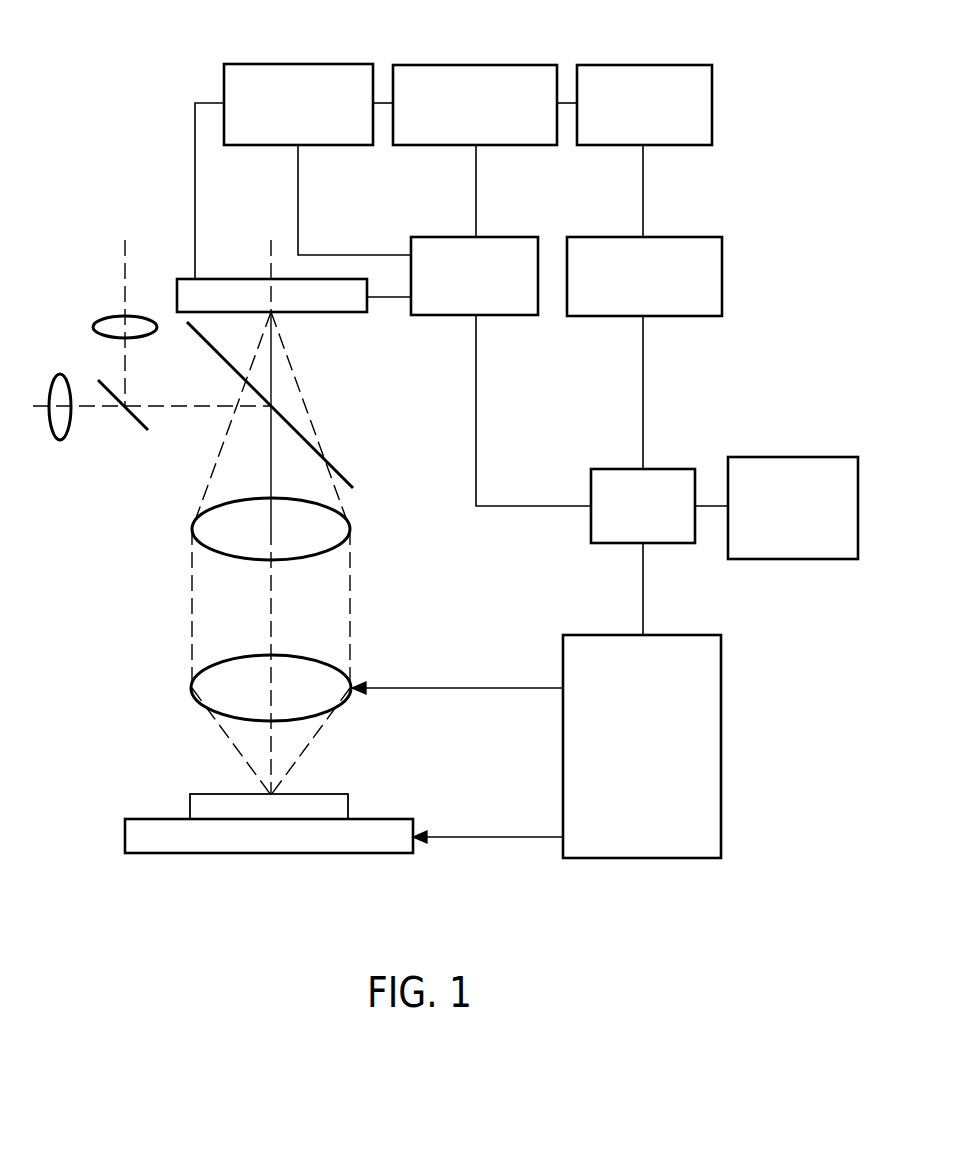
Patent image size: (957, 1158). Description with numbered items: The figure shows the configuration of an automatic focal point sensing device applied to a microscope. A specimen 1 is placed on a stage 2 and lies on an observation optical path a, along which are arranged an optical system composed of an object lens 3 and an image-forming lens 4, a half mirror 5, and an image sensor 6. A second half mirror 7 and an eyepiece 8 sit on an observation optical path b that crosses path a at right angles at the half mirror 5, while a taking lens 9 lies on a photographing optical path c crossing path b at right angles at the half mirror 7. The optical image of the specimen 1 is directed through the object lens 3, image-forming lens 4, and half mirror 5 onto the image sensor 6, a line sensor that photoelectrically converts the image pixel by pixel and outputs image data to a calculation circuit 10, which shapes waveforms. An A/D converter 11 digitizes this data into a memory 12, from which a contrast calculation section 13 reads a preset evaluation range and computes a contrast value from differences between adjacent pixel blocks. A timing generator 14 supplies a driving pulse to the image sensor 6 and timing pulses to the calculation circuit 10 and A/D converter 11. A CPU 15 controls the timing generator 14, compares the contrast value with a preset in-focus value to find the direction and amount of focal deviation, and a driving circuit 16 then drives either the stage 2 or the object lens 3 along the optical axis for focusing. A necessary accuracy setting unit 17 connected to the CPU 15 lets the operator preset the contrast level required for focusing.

The specimen 1 is at (352, 805).
The stage 2 is at (370, 848).
The object lens 3 is at (290, 665).
The image-forming lens 4 is at (287, 504).
The half mirror 5 is at (291, 423).
The image sensor 6 is at (342, 312).
The half mirror 7 is at (139, 425).
The eyepiece 8 is at (60, 440).
The taking lens 9 is at (93, 327).
The calculation circuit 10 is at (330, 64).
The A/D converter 11 is at (493, 65).
The memory 12 is at (666, 65).
The contrast calculation section 13 is at (683, 237).
The timing generator 14 is at (510, 237).
The CPU 15 is at (670, 469).
The driving circuit 16 is at (680, 635).
The necessary accuracy setting unit 17 is at (790, 457).
The observation optical path a is at (271, 252).
The observation optical path b is at (100, 410).
The photographing optical path c is at (125, 287).